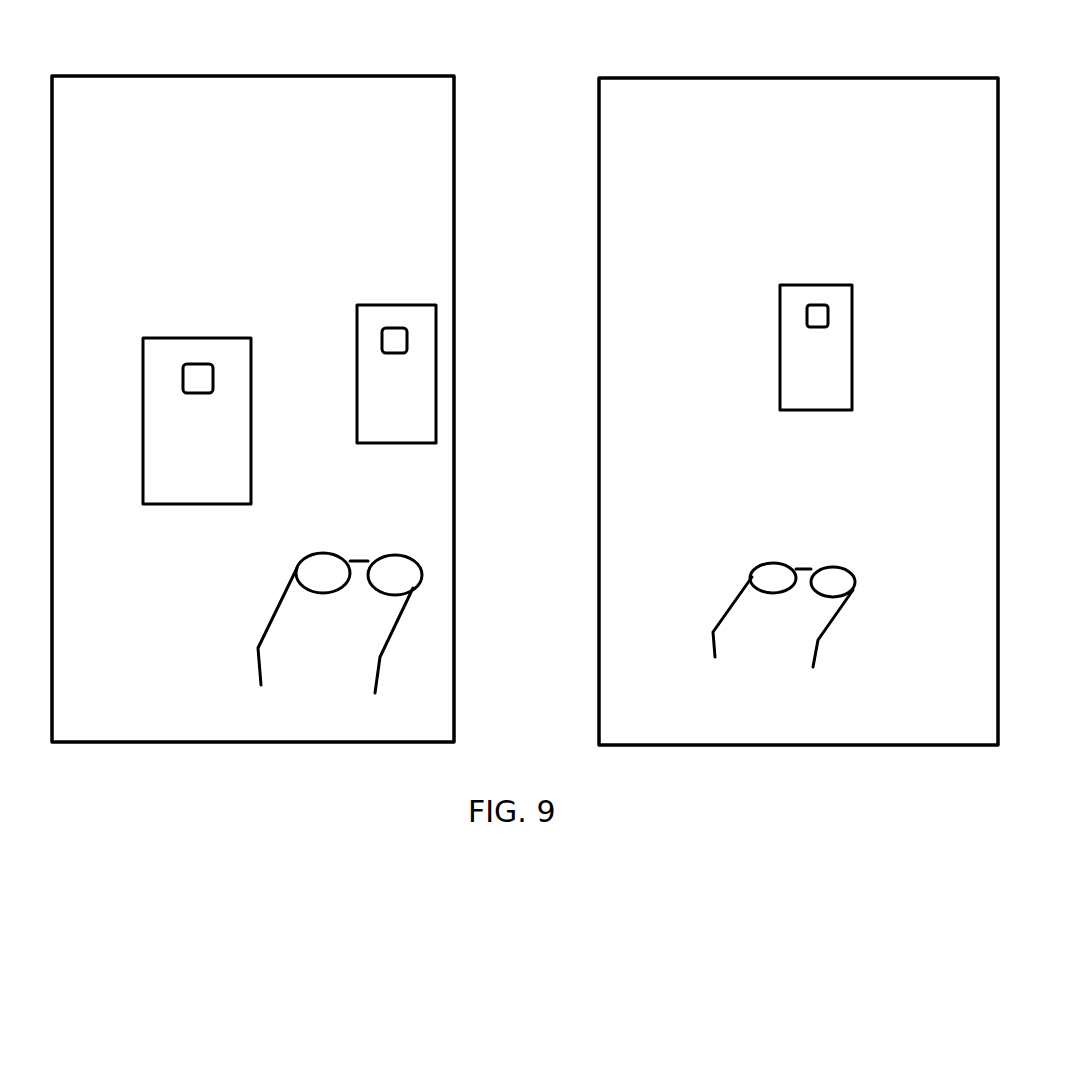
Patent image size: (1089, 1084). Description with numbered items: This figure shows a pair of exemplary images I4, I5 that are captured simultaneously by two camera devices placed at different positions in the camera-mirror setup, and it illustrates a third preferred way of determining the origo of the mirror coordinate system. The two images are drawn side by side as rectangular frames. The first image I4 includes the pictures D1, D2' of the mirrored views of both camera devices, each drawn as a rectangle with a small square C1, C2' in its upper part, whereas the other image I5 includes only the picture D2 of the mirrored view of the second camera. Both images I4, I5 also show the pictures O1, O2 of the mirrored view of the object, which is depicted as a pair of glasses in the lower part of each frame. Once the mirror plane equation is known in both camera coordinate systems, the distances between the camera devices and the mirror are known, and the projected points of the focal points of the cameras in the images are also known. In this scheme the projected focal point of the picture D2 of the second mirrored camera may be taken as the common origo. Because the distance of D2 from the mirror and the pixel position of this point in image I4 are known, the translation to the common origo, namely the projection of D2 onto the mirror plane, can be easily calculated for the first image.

The image I4 is at (456, 150).
The image I5 is at (1001, 160).
The picture of the mirrored view of the first camera device D1 is at (251, 485).
The first camera C1 is at (213, 378).
The picture of the mirrored view of the second camera device D2' is at (370, 399).
The second camera (mirrored) C2' is at (349, 341).
The picture of the mirrored view of the second camera D2 is at (850, 354).
The picture of the mirrored view of the object O1 is at (380, 673).
The picture of the mirrored view of the object O2 is at (828, 312).